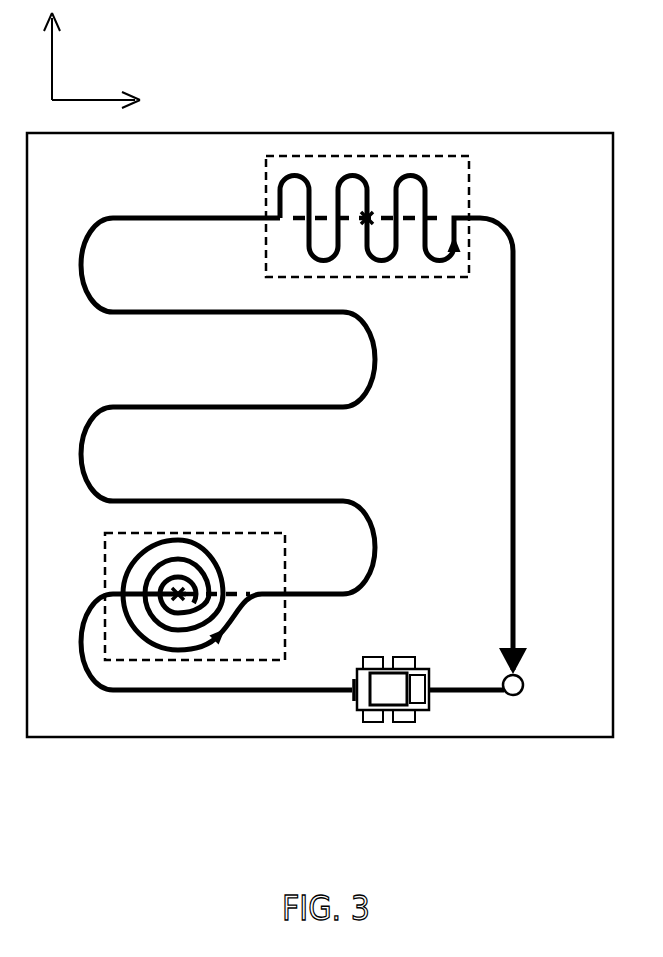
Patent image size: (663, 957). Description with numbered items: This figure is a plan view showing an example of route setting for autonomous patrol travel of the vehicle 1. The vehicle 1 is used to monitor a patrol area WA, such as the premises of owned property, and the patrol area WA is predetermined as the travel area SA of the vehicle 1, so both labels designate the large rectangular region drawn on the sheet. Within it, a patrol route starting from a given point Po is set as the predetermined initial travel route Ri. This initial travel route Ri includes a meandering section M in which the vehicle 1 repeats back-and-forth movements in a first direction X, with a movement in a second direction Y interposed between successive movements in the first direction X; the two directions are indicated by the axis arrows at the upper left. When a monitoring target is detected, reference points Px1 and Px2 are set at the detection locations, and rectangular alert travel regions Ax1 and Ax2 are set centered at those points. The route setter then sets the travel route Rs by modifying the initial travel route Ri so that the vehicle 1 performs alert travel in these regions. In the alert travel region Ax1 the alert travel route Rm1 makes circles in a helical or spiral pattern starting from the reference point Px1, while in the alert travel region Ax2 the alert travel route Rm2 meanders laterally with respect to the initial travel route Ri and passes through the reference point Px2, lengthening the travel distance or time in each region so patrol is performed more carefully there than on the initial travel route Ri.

The vehicle 1 is at (425, 664).
The meandering section M is at (115, 388).
The travel route Rs is at (190, 310).
The initial travel route Ri is at (448, 214).
The alert travel route Rm1 is at (217, 596).
The alert travel route Rm2 is at (374, 211).
The alert travel region Ax1 is at (285, 628).
The alert travel region Ax2 is at (369, 156).
The reference point Px1 is at (188, 582).
The reference point Px2 is at (374, 220).
The given point Po is at (523, 695).
The patrol area WA is at (321, 389).
The travel area SA is at (537, 132).
The first direction X is at (111, 94).
The second direction Y is at (34, 8).